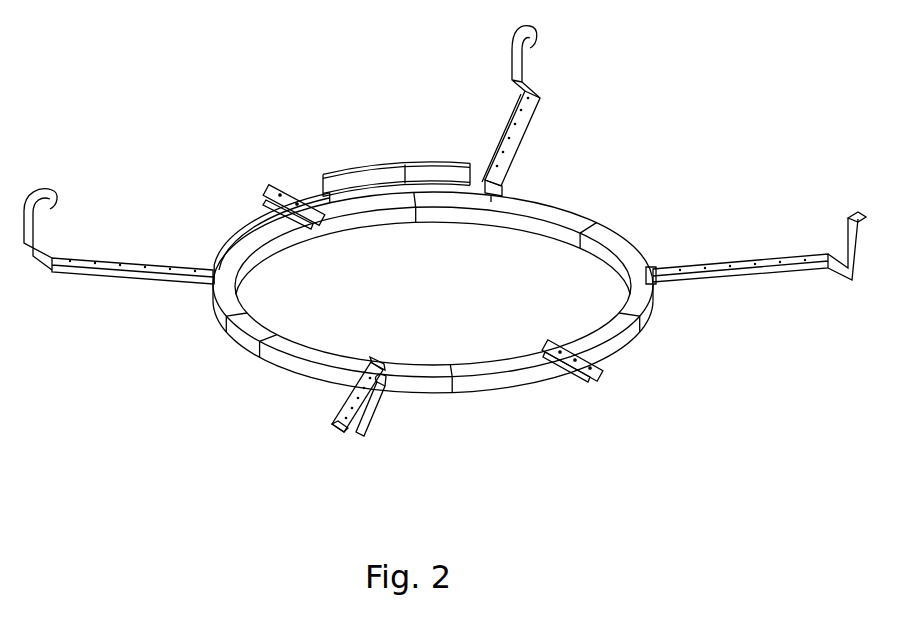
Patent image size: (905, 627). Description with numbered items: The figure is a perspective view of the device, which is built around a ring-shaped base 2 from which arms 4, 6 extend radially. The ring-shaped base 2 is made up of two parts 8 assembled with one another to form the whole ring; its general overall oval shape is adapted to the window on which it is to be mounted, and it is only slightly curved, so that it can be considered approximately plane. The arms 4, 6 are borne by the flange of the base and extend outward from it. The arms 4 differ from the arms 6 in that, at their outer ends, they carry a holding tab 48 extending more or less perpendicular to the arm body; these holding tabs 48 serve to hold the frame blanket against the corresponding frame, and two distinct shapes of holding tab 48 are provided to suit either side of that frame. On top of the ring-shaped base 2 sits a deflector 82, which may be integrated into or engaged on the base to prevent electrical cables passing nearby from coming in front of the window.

The ring-shaped base 2 is at (540, 214).
The parts 8 is at (377, 224).
The deflector 82 is at (420, 170).
The arm 6 is at (307, 198).
The arm 4 is at (130, 282).
The holding tab 48 is at (33, 232).